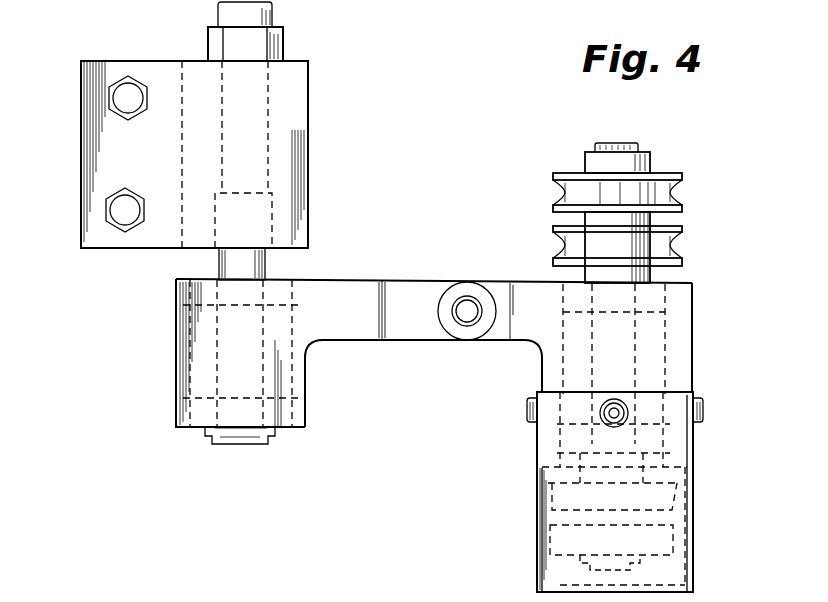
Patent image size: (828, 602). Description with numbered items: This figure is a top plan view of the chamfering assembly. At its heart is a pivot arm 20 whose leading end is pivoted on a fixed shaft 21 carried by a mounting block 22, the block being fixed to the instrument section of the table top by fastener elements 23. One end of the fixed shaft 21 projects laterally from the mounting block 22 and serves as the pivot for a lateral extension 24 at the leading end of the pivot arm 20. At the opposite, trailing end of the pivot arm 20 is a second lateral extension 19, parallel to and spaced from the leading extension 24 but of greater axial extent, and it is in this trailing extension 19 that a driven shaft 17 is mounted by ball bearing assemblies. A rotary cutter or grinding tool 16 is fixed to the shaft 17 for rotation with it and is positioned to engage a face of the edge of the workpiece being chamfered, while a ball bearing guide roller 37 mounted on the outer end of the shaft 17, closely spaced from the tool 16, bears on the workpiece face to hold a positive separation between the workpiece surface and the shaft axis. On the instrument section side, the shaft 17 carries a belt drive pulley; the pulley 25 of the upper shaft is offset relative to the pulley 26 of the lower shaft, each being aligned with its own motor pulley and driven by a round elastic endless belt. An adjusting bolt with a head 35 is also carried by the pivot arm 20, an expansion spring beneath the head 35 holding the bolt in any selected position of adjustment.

The rotary cutter or grinding tool 16 is at (548, 501).
The driven shaft 17 is at (625, 143).
The lateral extension 19 is at (545, 381).
The pivot arm 20 is at (385, 290).
The fixed shaft 21 is at (219, 258).
The mounting block 22 is at (88, 179).
The fastener elements 23 is at (119, 130).
The lateral extension 24 is at (306, 386).
The belt drive pulley 25 is at (553, 172).
The belt drive pulley 26 is at (682, 229).
The bolt head 35 is at (467, 318).
The ball bearing guide roller 37 is at (682, 541).